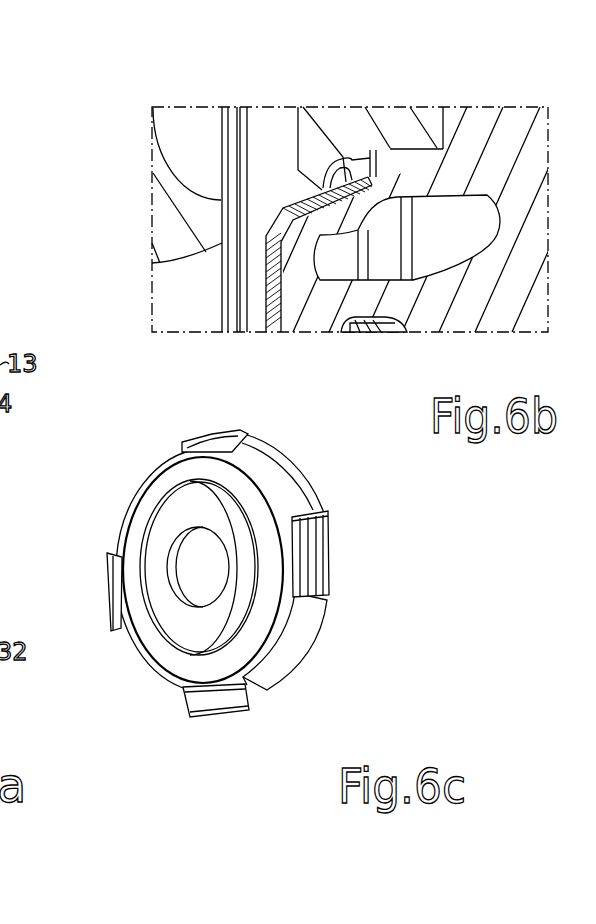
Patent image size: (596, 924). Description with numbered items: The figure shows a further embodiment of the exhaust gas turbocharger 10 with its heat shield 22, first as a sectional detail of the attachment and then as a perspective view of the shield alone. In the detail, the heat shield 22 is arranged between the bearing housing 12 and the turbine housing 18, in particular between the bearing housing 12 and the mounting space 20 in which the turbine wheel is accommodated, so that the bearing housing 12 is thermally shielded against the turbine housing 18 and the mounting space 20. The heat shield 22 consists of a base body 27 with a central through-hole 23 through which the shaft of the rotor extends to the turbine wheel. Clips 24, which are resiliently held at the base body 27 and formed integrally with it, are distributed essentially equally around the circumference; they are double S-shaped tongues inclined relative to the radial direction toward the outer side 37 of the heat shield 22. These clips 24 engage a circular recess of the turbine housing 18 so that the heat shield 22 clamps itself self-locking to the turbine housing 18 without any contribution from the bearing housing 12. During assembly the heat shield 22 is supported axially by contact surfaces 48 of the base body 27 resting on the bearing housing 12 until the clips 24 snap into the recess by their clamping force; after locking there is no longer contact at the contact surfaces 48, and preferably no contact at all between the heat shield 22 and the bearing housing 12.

In FIG. 6b, the exhaust gas turbocharger section 10 is at (437, 372).
In FIG. 6b, the bearing housing 12 is at (489, 135).
In FIG. 6b, the turbine housing 18 is at (173, 210).
In FIG. 6b, the mounting space 20 is at (191, 296).
In FIG. 6b, the heat shield 22 is at (288, 197).
In FIG. 6c, the heat shield 22 is at (217, 804).
In FIG. 6b, the contact surfaces 48 is at (378, 182).
In FIG. 6c, the contact surfaces 48 is at (323, 482).
In FIG. 6c, the clips 24 is at (232, 420).
In FIG. 6c, the base body 27 is at (252, 510).
In FIG. 6c, the outer side 37 is at (275, 449).
In FIG. 6c, the through-hole 23 is at (188, 561).